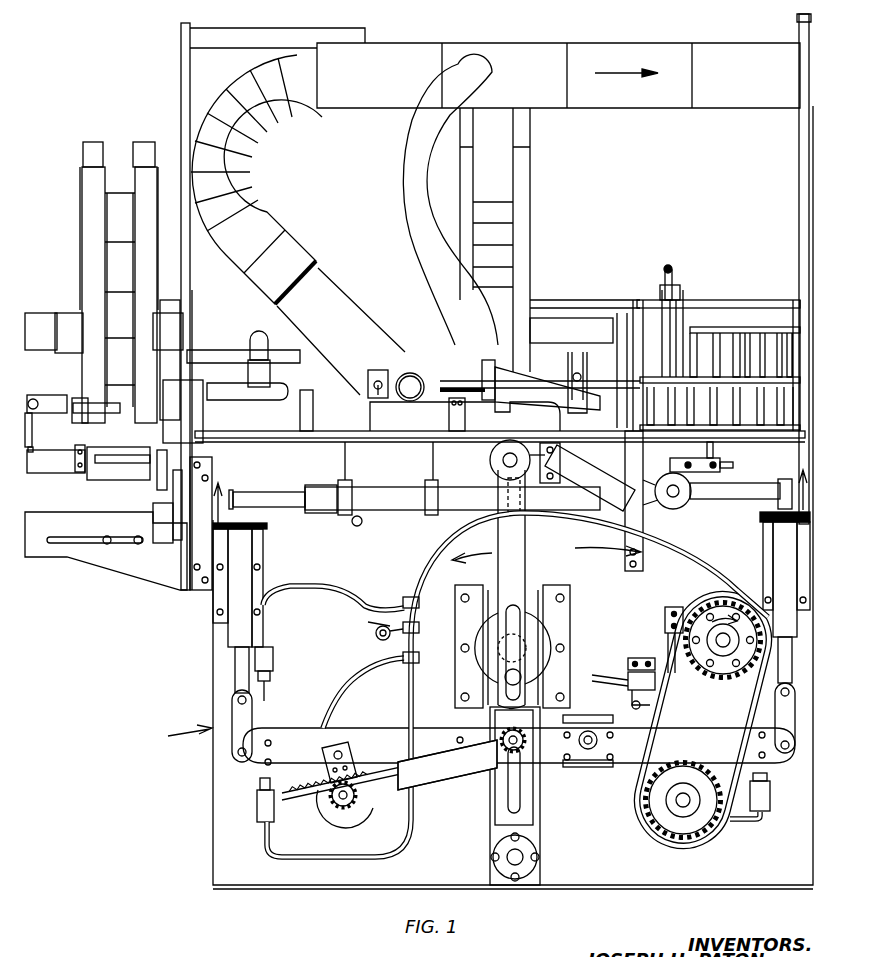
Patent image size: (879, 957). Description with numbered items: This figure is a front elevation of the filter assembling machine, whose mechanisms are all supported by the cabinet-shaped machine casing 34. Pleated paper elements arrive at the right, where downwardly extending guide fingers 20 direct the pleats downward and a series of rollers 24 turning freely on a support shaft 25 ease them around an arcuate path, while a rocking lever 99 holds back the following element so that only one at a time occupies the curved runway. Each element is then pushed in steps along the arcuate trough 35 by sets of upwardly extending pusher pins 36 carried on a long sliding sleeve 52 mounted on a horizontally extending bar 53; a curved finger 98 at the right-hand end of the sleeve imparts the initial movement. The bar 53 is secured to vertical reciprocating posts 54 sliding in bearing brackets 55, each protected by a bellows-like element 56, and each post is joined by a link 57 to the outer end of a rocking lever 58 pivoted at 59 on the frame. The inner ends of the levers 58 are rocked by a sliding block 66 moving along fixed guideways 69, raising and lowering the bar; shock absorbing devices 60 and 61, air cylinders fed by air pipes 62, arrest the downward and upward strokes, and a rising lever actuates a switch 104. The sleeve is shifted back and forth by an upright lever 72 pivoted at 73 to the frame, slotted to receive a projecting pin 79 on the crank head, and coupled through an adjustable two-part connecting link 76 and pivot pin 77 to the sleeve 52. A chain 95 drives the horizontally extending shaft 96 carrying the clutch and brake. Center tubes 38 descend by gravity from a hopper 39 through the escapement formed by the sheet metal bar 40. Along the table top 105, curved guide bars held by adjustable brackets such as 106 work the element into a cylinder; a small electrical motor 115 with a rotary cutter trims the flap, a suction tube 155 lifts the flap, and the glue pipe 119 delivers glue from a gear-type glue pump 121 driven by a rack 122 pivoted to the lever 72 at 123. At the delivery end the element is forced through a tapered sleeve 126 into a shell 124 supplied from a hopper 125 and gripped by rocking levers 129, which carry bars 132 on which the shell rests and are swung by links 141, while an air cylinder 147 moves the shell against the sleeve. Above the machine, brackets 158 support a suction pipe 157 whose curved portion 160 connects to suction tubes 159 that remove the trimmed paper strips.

The brackets 158 is at (184, 72).
The suction pipe 157 is at (648, 34).
The curved portion of suction pipe 160 is at (252, 223).
The suction tubes 159 is at (322, 322).
The hopper 39 is at (518, 174).
The center tubes 38 is at (502, 259).
The sheet metal bar 40 is at (565, 332).
The rocking lever 99 is at (680, 288).
The guide fingers 20 is at (767, 348).
The rollers 24 is at (777, 407).
The support shaft 25 is at (728, 410).
The curved finger 98 is at (708, 450).
The pivot pin 77 is at (671, 498).
The connecting link 76 is at (583, 481).
The upright lever 72 is at (510, 532).
The fixed guideways 69 is at (457, 624).
The sliding block 66 is at (535, 589).
The projecting pin 79 is at (520, 678).
The rack pivot 123 is at (513, 746).
The pivot 73 is at (524, 857).
The rocking lever 58 is at (318, 704).
The pivot pin 59 is at (593, 750).
The switch 104 is at (637, 709).
The horizontally extending shaft 96 is at (723, 641).
The chain 95 is at (657, 743).
The bellows-like element 56 is at (273, 529).
The bearing brackets 55 is at (240, 584).
The reciprocating posts 54 is at (237, 668).
The link 57 is at (237, 734).
The shock absorbing device 61 is at (268, 661).
The shock absorbing device 60 is at (262, 808).
The machine casing 34 is at (180, 724).
The air pipes 62 is at (361, 601).
The gear-type glue pump 121 is at (352, 798).
The rack 122 is at (310, 798).
The sliding sleeve 52 is at (407, 511).
The pusher pins 36 is at (343, 463).
The horizontally extending bar 53 is at (288, 479).
The electrical motor 115 is at (409, 382).
The suction tube 155 is at (487, 371).
The trough 35 is at (487, 418).
The adjustable bracket 106 is at (313, 408).
The glue pipe 119 is at (270, 373).
The table top 105 is at (423, 443).
The hopper 125 is at (93, 156).
The shells 124 is at (120, 263).
The air cylinder 147 is at (52, 384).
The bar or pipe 132 is at (110, 458).
The sleeve 126 is at (172, 394).
The rocking levers 129 is at (157, 433).
The links 141 is at (177, 538).